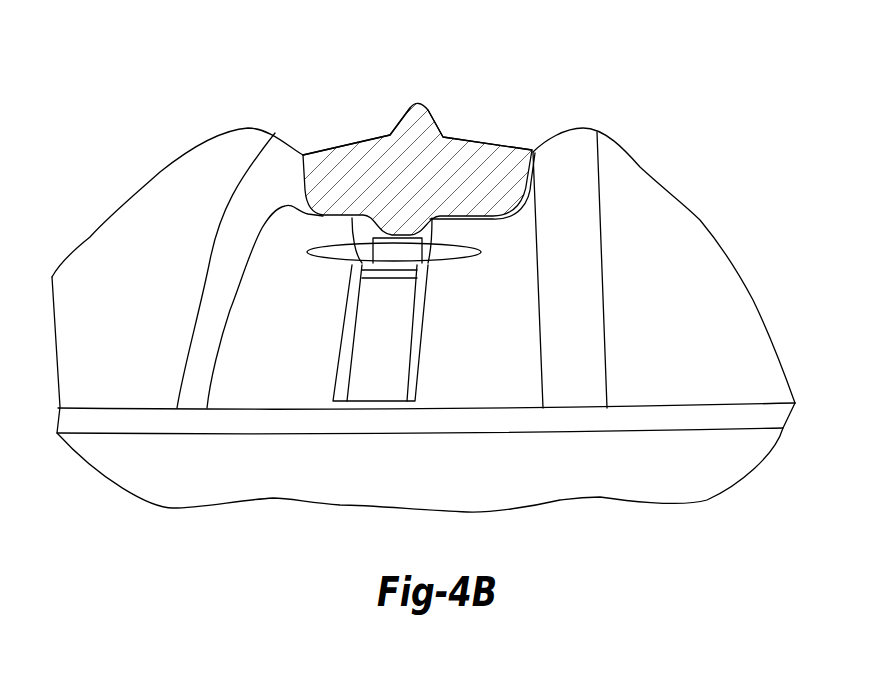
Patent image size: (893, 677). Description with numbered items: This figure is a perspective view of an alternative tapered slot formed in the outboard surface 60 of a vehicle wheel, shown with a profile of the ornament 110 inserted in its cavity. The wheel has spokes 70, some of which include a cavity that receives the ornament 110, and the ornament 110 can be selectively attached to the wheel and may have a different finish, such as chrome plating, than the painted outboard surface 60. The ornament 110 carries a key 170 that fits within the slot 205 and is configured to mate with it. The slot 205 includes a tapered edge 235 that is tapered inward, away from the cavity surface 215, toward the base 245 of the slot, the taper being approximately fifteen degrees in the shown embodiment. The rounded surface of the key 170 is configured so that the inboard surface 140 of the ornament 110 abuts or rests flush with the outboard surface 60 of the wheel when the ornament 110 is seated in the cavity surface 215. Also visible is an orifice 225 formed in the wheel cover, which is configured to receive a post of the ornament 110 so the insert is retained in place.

The outboard surface 60 is at (283, 222).
The spokes 70 is at (673, 237).
The ornament 110 is at (502, 147).
The inboard surface 140 is at (340, 214).
The key 170 is at (430, 239).
The slot 205 is at (383, 387).
The cavity surface 215 is at (302, 353).
The orifice 225 is at (447, 272).
The tapered edge 235 is at (347, 300).
The base 245 is at (397, 351).